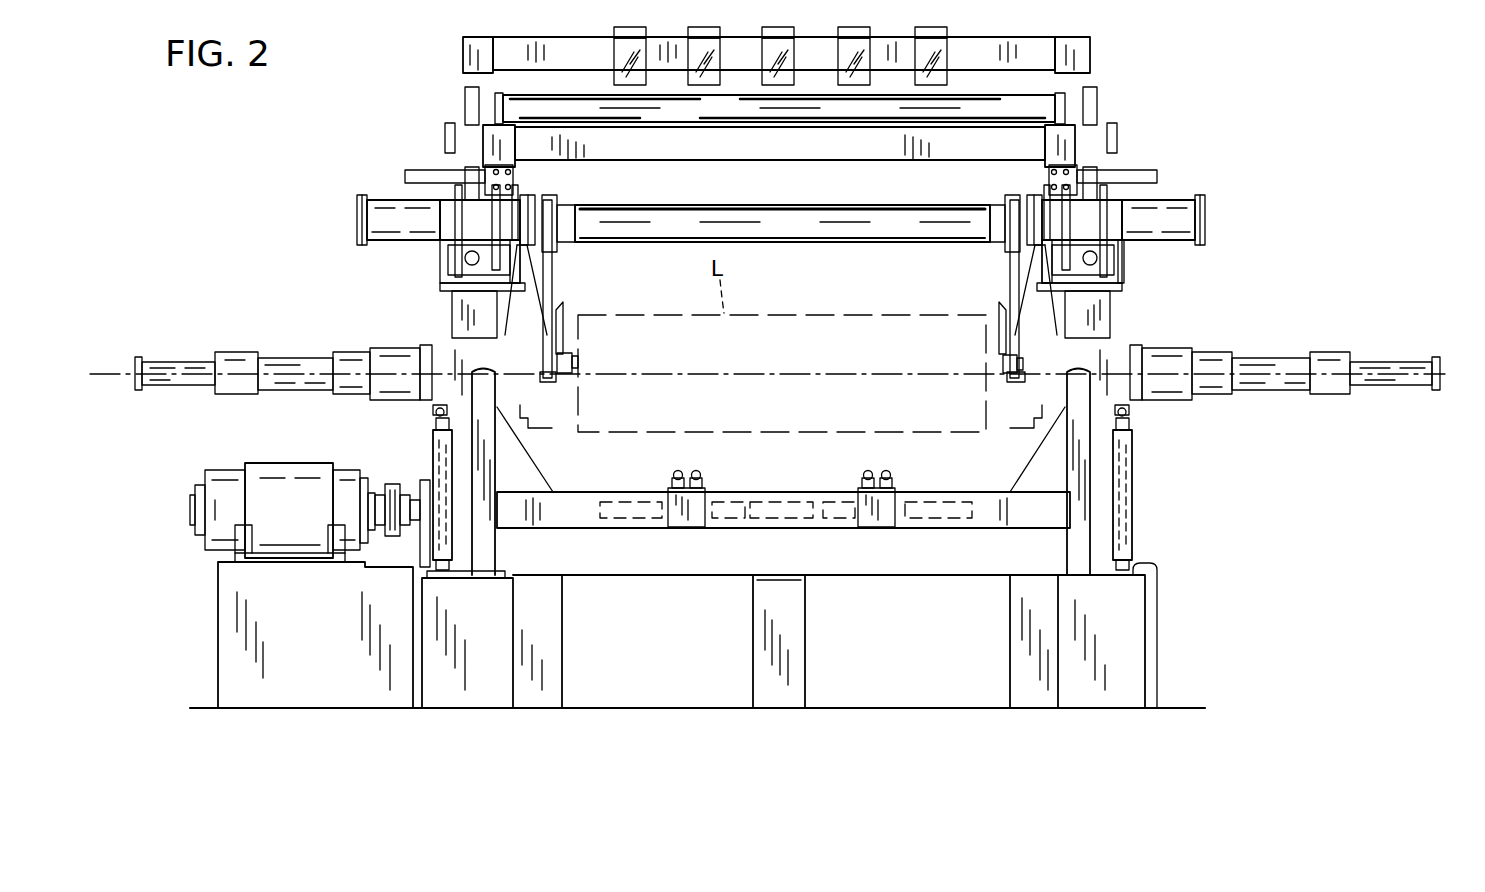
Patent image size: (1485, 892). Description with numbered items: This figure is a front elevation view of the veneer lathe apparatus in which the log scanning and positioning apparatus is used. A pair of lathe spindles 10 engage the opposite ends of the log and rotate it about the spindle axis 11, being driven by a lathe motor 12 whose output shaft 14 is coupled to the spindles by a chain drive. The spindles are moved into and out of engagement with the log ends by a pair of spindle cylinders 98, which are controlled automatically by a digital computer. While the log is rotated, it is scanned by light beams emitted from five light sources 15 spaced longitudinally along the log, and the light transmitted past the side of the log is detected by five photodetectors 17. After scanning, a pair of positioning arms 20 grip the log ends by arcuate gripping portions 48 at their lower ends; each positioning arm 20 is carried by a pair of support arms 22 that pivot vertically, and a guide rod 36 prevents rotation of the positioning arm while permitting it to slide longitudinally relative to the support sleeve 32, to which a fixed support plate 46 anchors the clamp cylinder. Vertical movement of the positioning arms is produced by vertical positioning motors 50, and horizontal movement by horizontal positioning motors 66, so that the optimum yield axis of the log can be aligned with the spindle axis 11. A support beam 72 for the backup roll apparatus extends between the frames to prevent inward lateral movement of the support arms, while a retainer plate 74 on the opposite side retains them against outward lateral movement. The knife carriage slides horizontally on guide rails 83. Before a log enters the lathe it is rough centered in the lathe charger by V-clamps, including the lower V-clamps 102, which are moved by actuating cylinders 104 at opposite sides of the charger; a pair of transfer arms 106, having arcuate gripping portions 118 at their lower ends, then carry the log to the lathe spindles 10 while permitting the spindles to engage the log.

The lathe spindles 10 is at (555, 376).
The spindle axis 11 is at (775, 370).
The lathe motor 12 is at (288, 462).
The output shaft 14 is at (413, 490).
The light sources 15 is at (652, 528).
The photodetectors 17 is at (632, 85).
The positioning arm 20 is at (550, 285).
The support arms 22 is at (1134, 275).
The support sleeve 32 is at (392, 200).
The guide rod 36 is at (405, 176).
The support plate 46 is at (357, 228).
The arcuate gripping portion 48 is at (574, 360).
The vertical positioning motor 50 is at (463, 165).
The horizontal positioning motor 66 is at (465, 258).
The support beam 72 is at (850, 242).
The retainer plate 74 is at (1125, 272).
The guide rails 83 is at (527, 424).
The spindle cylinders 98 is at (182, 358).
The lower V-clamps 102 is at (695, 470).
The actuating cylinders 104 is at (453, 537).
The transfer arms 106 is at (570, 308).
The arcuate gripping portions 118 is at (565, 352).